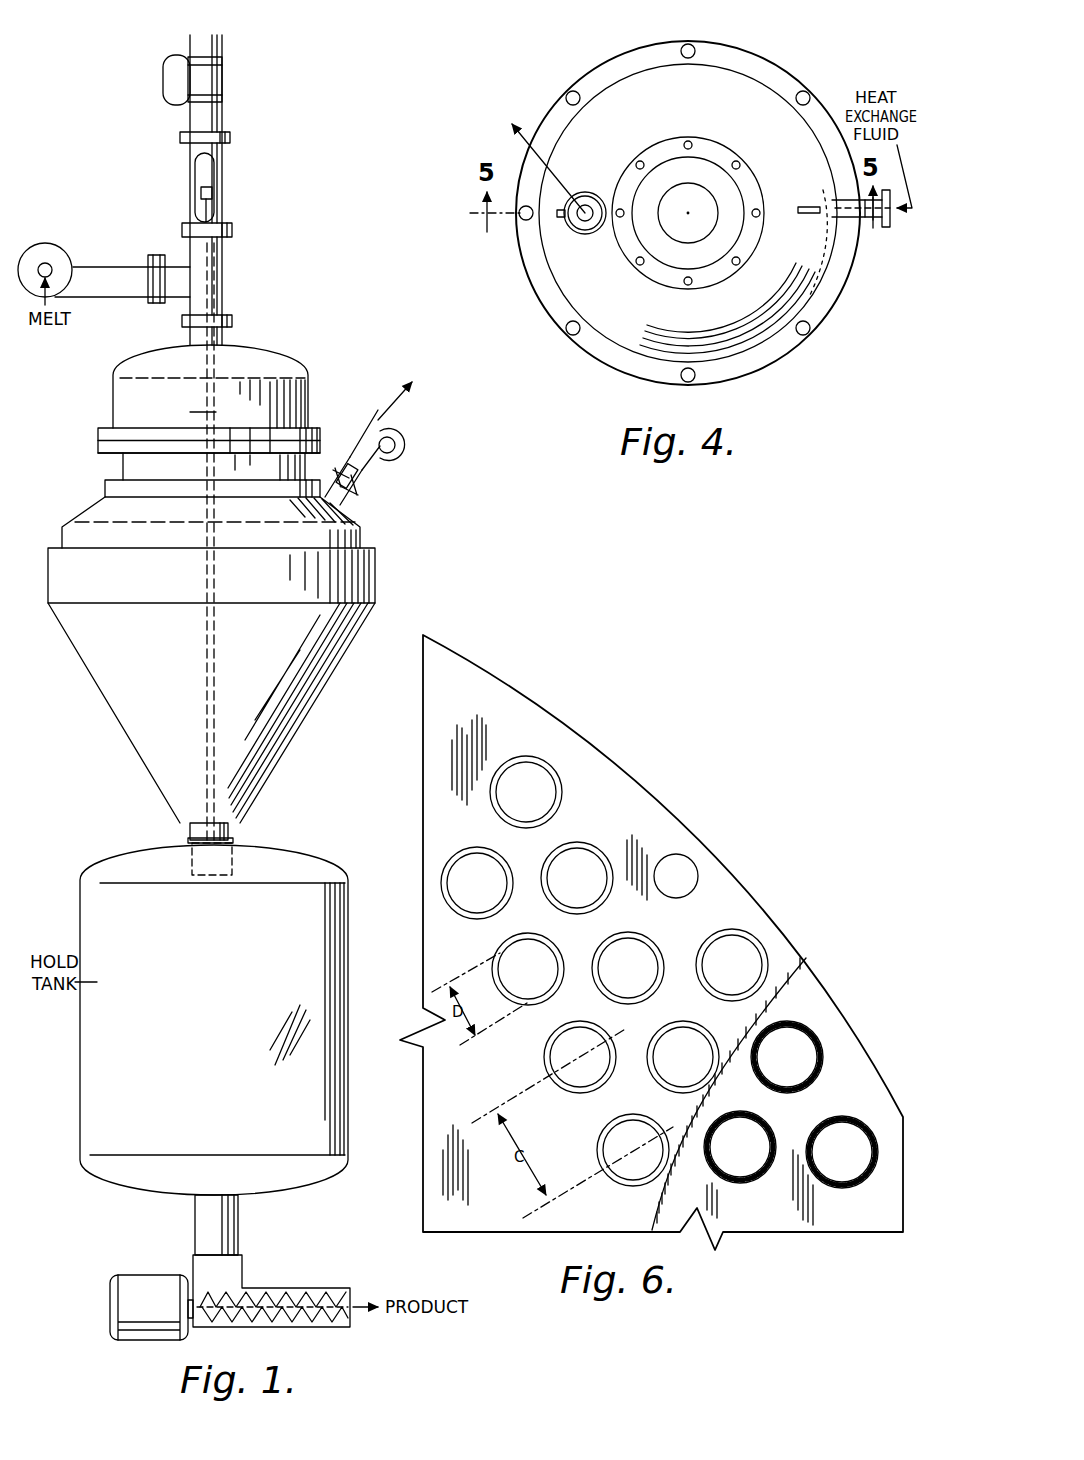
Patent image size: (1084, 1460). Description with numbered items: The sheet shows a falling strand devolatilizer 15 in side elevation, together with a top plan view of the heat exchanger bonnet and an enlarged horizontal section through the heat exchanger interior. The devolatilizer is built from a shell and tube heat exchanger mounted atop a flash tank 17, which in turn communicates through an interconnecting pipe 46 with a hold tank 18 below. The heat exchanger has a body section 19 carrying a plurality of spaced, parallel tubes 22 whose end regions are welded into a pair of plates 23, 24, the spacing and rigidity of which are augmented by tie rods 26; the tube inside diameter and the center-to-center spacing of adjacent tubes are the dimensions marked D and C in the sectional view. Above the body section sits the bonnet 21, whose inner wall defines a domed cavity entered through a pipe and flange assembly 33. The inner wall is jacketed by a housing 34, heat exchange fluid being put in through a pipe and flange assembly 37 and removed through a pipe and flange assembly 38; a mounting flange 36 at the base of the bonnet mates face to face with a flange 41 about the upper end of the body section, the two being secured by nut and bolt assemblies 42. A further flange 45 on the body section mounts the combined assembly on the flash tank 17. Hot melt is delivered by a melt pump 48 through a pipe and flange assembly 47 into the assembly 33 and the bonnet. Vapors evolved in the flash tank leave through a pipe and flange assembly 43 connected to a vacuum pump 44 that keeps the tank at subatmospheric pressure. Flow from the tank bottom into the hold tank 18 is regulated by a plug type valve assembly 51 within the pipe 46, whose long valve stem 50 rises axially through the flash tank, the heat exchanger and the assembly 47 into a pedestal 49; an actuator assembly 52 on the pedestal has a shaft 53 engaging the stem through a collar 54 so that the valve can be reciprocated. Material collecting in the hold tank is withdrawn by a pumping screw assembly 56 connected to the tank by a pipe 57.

In FIG. 1, the falling strand devolatilizer 15 is at (259, 372).
In FIG. 1, the flash tank 17 is at (327, 692).
In FIG. 1, the hold tank 18 is at (348, 905).
In FIG. 1, the shell and tube heat exchanger body section 19 is at (130, 465).
In FIG. 1, the bonnet 21 is at (277, 350).
In FIG. 6, the tubes 22 is at (568, 843).
In FIG. 6, the plate 23 is at (764, 935).
In FIG. 6, the plate 24 is at (812, 995).
In FIG. 6, the tie rods 26 is at (685, 866).
In FIG. 1, the pipe and flange assembly 33 is at (233, 323).
In FIG. 4, the pipe and flange assembly 33 is at (618, 252).
In FIG. 4, the housing 34 is at (715, 85).
In FIG. 1, the mounting flange 36 is at (98, 440).
In FIG. 4, the mounting flange 36 is at (813, 114).
In FIG. 4, the pipe and flange assembly 37 is at (860, 222).
In FIG. 4, the pipe and flange assembly 38 is at (575, 235).
In FIG. 1, the flange 41 is at (98, 445).
In FIG. 4, the nut and bolt assemblies 42 is at (690, 44).
In FIG. 1, the pipe and flange assembly 43 is at (352, 500).
In FIG. 1, the vacuum pump 44 is at (400, 440).
In FIG. 1, the flange 45 is at (105, 490).
In FIG. 1, the interconnecting pipe 46 is at (232, 832).
In FIG. 1, the pipe and flange assembly 47 is at (227, 277).
In FIG. 1, the melt pump 48 is at (43, 243).
In FIG. 4, the melt pump 48 is at (727, 226).
In FIG. 1, the pedestal 49 is at (227, 172).
In FIG. 1, the valve stem 50 is at (208, 210).
In FIG. 1, the plug type valve assembly 51 is at (192, 862).
In FIG. 1, the actuator assembly 52 is at (217, 78).
In FIG. 1, the shaft 53 is at (213, 160).
In FIG. 1, the collar 54 is at (213, 193).
In FIG. 1, the pumping screw assembly 56 is at (287, 1288).
In FIG. 1, the pipe 57 is at (225, 1223).